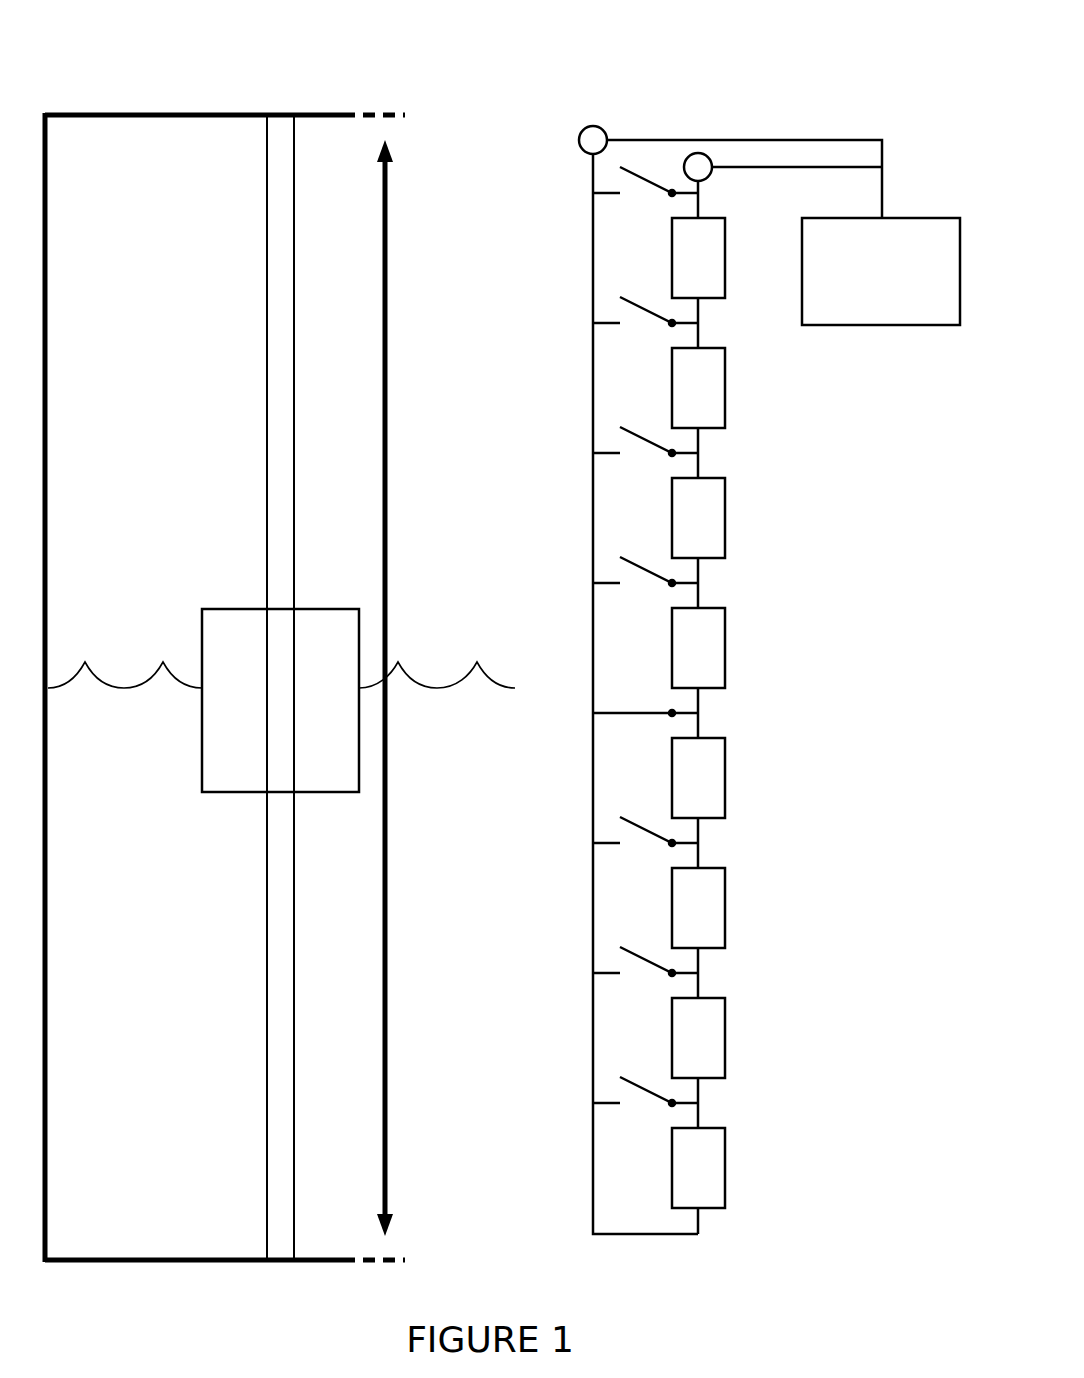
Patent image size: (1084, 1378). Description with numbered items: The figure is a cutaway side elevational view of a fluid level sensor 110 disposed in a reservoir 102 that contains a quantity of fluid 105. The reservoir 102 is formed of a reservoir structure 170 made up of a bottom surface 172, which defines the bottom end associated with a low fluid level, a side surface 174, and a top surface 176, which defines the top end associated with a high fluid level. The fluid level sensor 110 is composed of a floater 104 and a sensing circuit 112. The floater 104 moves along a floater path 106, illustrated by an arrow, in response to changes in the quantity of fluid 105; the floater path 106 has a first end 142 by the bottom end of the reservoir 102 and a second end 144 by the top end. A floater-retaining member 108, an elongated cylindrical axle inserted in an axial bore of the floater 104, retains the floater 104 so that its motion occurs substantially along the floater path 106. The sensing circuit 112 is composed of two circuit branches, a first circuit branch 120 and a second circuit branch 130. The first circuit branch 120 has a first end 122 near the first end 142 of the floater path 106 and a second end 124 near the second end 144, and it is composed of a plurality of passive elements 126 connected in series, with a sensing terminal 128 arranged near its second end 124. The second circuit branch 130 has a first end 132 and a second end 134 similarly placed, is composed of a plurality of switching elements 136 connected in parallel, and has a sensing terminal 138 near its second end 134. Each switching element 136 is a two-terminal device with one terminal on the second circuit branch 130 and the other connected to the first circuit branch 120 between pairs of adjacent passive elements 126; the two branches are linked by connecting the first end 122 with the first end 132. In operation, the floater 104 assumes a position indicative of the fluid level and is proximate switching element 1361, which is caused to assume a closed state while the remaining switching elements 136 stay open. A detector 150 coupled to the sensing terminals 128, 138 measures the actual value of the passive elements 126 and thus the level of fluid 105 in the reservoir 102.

The reservoir 102 is at (194, 666).
The floater 104 is at (280, 700).
The fluid 105 is at (281, 708).
The floater path 106 is at (397, 653).
The floater-retaining member 108 is at (267, 180).
The fluid level sensor 110 is at (130, 427).
The sensing circuit 112 is at (705, 639).
The first circuit branch 120 is at (744, 639).
The first end of first circuit branch 122 is at (700, 1248).
The second end of first circuit branch 124 is at (755, 114).
The passive elements 126 is at (725, 650).
The sensing terminal 128 is at (703, 181).
The second circuit branch 130 is at (574, 639).
The first end of second circuit branch 132 is at (593, 1248).
The second end of second circuit branch 134 is at (528, 102).
The switching elements 136 is at (633, 540).
The switching element 1361 is at (590, 749).
The sensing terminal 138 is at (590, 152).
The first end of floater path 142 is at (345, 1210).
The second end of floater path 144 is at (343, 143).
The detector 150 is at (881, 271).
The reservoir structure 170 is at (194, 722).
The bottom surface 172 is at (202, 1258).
The side surface 174 is at (48, 1000).
The top surface 176 is at (100, 118).